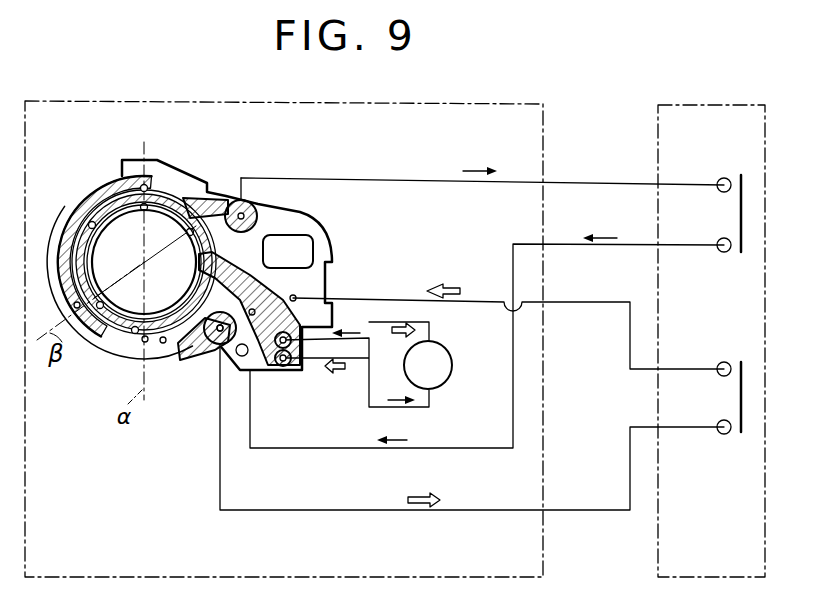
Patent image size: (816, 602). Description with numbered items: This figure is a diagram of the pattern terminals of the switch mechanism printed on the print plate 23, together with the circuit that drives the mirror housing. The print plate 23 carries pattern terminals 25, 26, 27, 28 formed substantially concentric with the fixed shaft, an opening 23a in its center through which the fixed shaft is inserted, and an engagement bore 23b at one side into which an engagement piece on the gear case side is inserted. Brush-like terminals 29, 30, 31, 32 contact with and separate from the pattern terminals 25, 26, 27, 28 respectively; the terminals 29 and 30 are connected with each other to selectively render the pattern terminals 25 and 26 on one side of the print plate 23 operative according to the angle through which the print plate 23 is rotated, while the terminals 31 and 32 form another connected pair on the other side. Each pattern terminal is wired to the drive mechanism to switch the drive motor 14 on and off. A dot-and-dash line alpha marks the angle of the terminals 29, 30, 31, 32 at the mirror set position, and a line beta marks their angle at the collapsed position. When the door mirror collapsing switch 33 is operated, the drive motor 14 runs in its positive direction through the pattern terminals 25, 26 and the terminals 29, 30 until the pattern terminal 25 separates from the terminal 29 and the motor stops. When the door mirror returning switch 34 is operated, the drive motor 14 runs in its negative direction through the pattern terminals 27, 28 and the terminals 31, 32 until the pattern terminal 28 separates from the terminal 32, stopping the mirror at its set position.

The drive motor 14 is at (443, 380).
The print plate 23 is at (273, 216).
The opening 23a is at (101, 345).
The engagement bore 23b is at (312, 250).
The pattern terminal 25 is at (100, 182).
The pattern terminal 26 is at (88, 228).
The pattern terminal 27 is at (280, 373).
The pattern terminal 28 is at (220, 332).
The brush-like terminal 29 is at (146, 186).
The brush-like terminal 30 is at (128, 199).
The brush-like terminal 31 is at (66, 268).
The brush-like terminal 32 is at (74, 305).
The door mirror collapsing switch 33 is at (742, 192).
The door mirror returning switch 34 is at (742, 412).